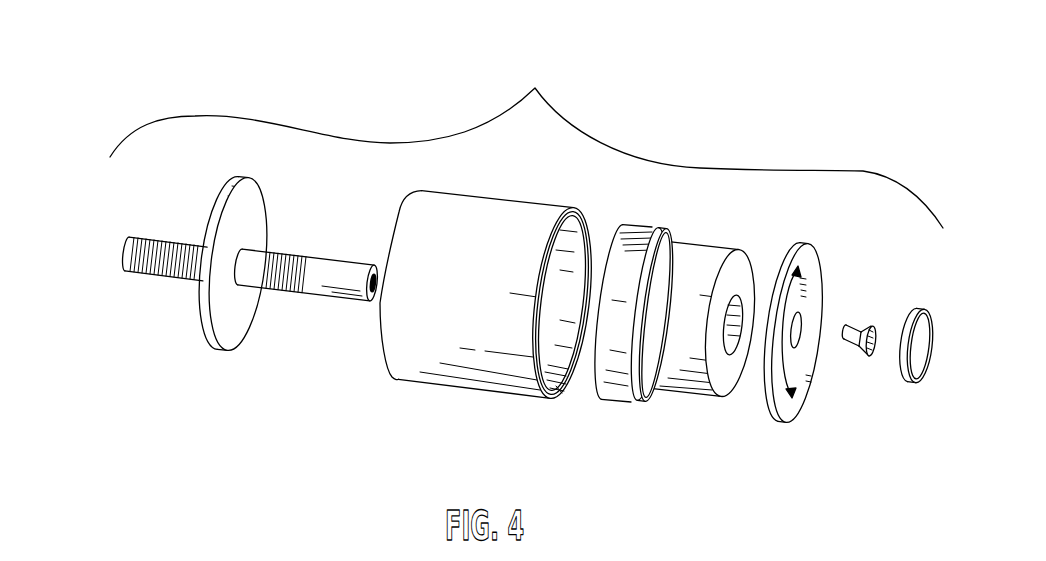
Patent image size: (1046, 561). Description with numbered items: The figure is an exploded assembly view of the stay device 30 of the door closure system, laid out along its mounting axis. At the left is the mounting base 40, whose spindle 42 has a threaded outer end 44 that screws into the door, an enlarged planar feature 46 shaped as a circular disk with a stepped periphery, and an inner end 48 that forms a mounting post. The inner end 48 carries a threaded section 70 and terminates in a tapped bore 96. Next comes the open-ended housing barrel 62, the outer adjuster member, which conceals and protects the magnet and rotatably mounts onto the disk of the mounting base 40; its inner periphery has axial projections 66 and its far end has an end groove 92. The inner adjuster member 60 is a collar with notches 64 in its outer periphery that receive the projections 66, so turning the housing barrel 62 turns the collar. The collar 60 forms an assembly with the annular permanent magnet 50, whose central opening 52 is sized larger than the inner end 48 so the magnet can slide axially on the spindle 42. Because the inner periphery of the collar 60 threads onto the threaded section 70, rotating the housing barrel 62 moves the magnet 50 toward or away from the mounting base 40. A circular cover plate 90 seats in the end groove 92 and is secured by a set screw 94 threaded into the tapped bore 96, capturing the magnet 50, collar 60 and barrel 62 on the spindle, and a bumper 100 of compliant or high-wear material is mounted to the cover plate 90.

The stay device 30 is at (178, 52).
The mounting base 40 is at (200, 374).
The spindle 42 is at (115, 245).
The outer end 44 is at (164, 240).
The planar feature 46 is at (247, 203).
The inner end 48 is at (307, 285).
The threaded section 70 is at (285, 290).
The tapped bore 96 is at (376, 296).
The housing barrel 62 is at (510, 322).
The end groove 92 is at (583, 223).
The axial projections 66 is at (552, 398).
The inner adjuster member 60 is at (630, 392).
The notches 64 is at (647, 238).
The permanent magnet 50 is at (702, 350).
The central opening 52 is at (738, 340).
The cover plate 90 is at (777, 420).
The set screw 94 is at (863, 358).
The bumper 100 is at (930, 365).